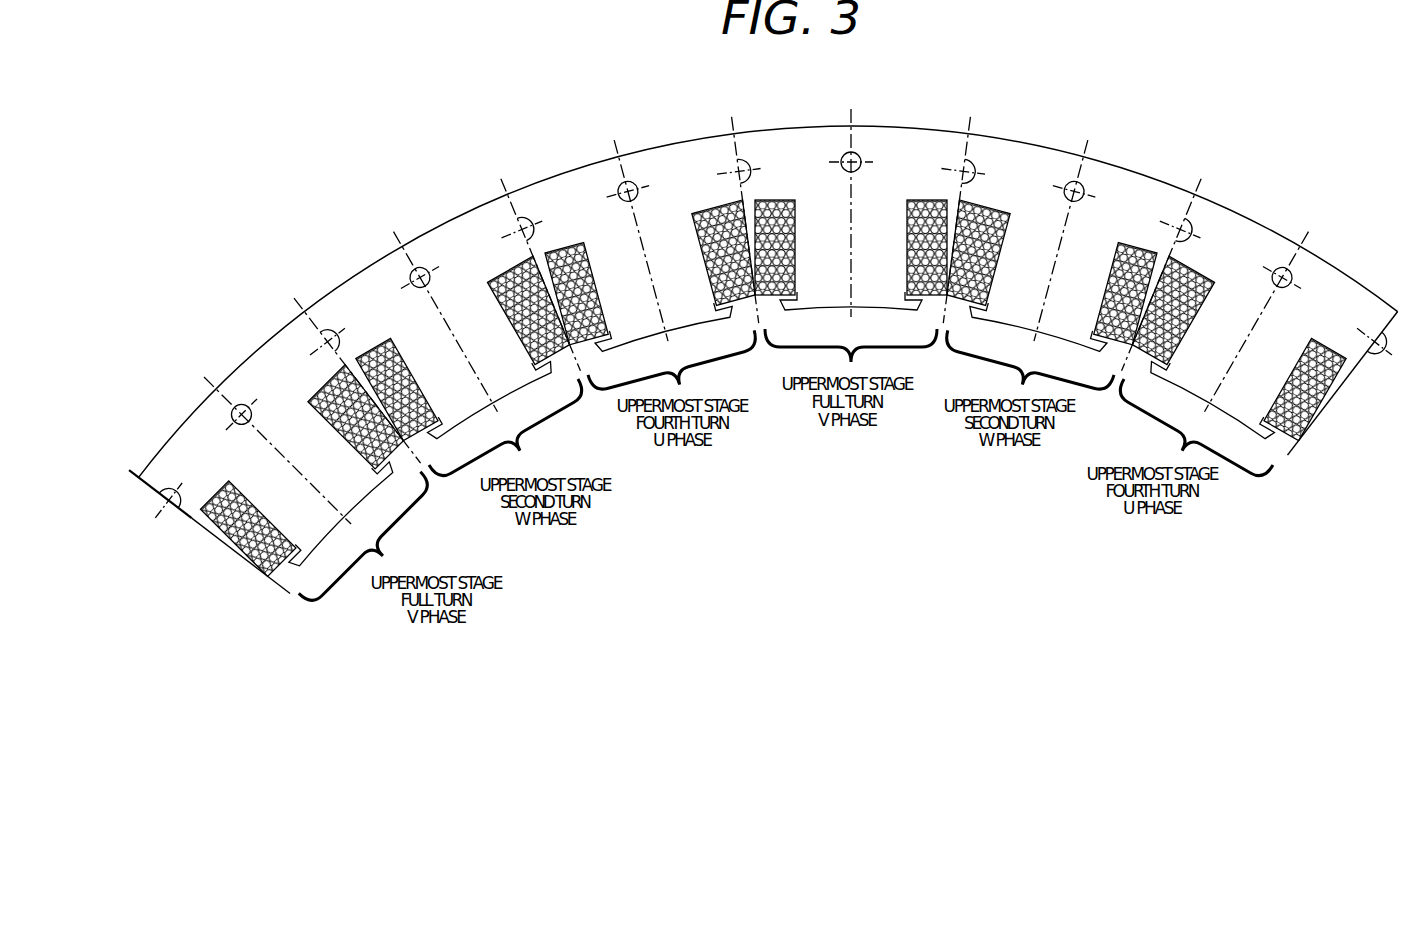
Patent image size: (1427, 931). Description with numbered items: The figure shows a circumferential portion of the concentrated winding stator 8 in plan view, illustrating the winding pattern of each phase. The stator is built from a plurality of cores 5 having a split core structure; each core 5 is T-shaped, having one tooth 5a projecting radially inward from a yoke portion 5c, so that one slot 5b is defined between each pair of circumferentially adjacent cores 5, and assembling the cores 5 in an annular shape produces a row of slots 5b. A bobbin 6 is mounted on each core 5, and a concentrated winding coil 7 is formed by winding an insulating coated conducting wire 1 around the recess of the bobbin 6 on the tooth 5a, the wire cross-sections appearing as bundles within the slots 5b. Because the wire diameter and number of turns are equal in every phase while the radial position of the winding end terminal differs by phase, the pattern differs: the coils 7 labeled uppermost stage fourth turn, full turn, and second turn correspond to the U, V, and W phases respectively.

The insulating coated conducting wire 1 is at (1198, 272).
The core 5 is at (1106, 165).
The tooth 5a is at (1256, 364).
The slot 5b is at (1144, 325).
The yoke portion 5c is at (1218, 222).
The bobbin 6 is at (1277, 430).
The concentrated winding coil 7 is at (1325, 256).
The concentrated winding stator 8 is at (1092, 114).